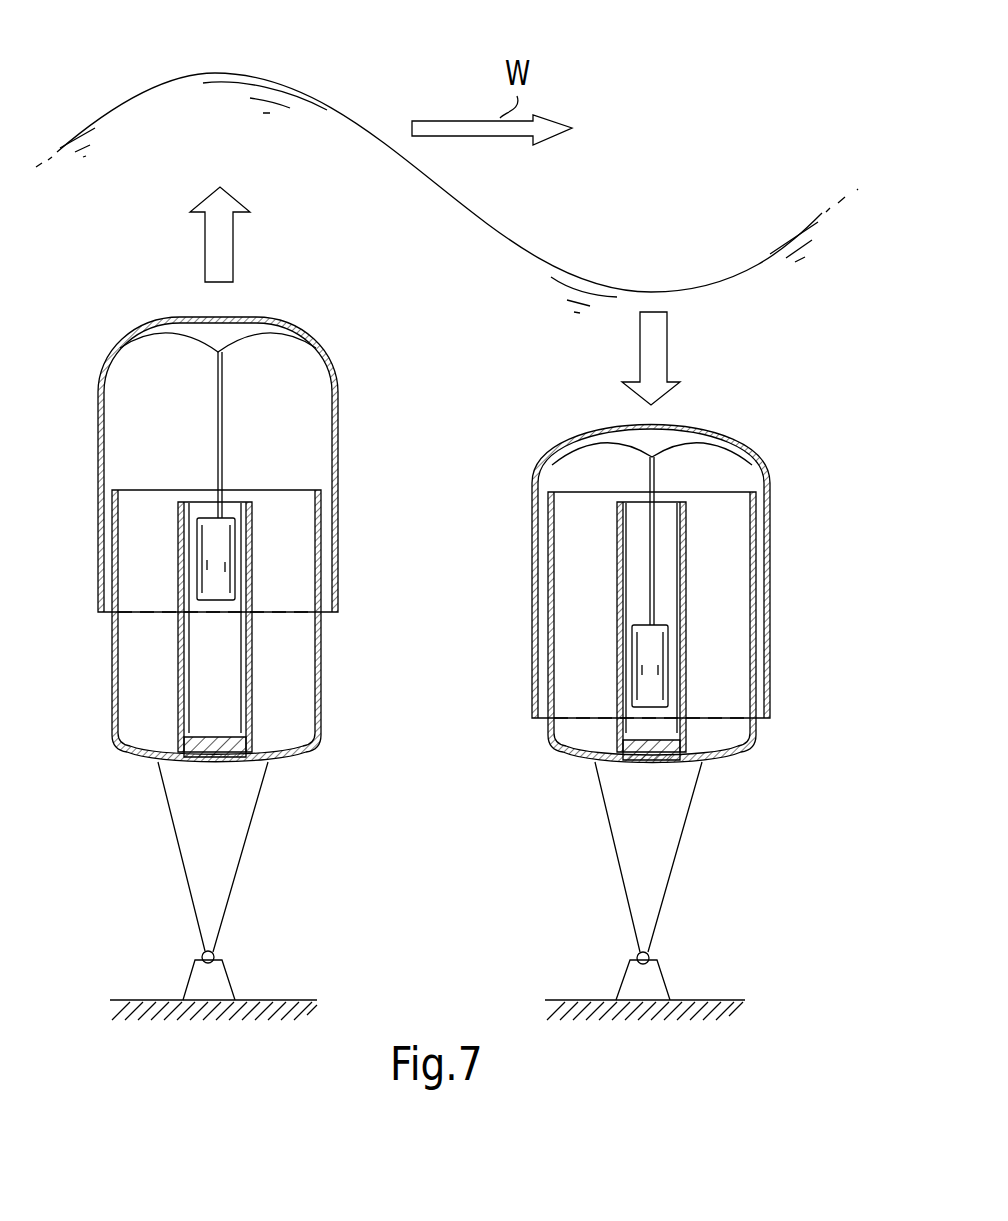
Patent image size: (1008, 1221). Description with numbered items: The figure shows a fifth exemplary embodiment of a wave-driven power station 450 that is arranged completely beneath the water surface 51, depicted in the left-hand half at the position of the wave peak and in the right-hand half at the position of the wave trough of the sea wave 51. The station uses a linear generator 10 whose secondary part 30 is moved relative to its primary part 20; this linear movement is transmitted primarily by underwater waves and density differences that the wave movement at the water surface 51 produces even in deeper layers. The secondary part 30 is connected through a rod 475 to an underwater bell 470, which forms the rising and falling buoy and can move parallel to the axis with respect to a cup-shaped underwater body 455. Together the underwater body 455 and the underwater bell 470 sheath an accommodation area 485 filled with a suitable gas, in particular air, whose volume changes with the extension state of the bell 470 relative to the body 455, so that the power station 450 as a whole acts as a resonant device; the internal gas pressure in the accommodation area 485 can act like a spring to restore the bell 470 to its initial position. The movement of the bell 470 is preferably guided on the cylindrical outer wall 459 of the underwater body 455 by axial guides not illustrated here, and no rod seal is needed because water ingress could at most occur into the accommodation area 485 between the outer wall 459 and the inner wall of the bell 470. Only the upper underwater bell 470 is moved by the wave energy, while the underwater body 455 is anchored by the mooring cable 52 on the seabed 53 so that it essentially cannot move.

The sea wave 51 is at (300, 85).
The wave-driven power station 450 is at (88, 306).
The underwater bell 470 is at (302, 331).
The accommodation area 485 is at (296, 391).
The rod 475 is at (223, 422).
The underwater body 455 is at (110, 702).
The primary part 20 is at (178, 628).
The secondary part 30 is at (200, 540).
The linear generator 10 is at (146, 710).
The mooring cable 52 is at (240, 872).
The seabed 53 is at (277, 1000).
The cylindrical outer wall 459 is at (753, 662).